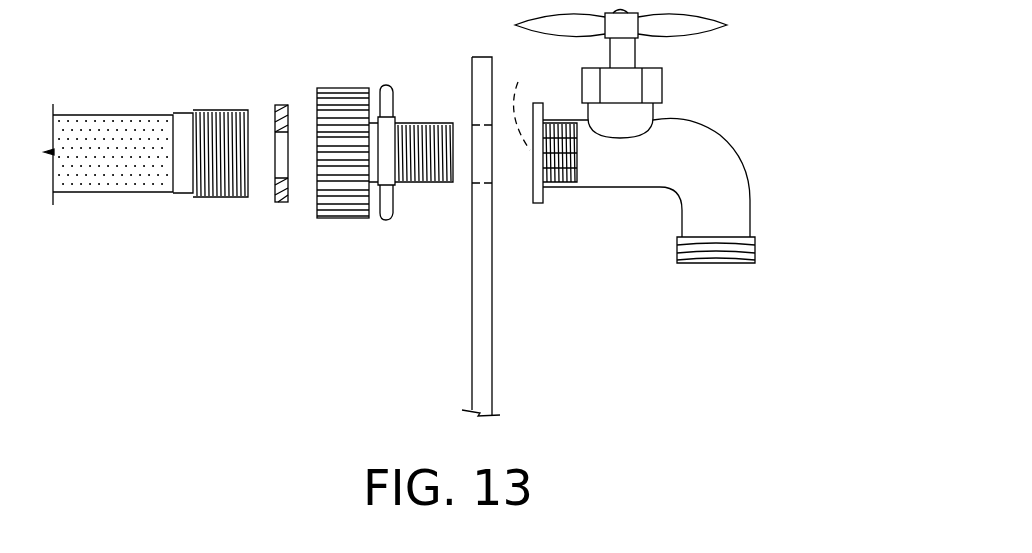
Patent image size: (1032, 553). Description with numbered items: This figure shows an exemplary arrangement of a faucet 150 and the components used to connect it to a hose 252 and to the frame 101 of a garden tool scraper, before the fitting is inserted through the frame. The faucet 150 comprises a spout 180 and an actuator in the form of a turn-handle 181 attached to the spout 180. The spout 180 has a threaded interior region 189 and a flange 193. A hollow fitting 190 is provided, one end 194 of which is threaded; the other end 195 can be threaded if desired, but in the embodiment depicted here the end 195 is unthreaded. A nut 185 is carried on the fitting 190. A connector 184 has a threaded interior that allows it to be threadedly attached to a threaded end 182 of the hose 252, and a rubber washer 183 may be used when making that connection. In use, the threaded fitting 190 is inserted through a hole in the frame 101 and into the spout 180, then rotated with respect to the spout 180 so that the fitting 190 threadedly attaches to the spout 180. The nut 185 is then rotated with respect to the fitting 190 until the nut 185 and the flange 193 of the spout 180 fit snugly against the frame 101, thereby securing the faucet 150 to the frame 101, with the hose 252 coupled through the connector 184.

The frame 101 is at (492, 365).
The faucet 150 is at (708, 152).
The spout 180 is at (718, 148).
The turn-handle 181 is at (720, 25).
The threaded end 182 is at (225, 198).
The rubber washer 183 is at (284, 203).
The hose connector 184 is at (345, 218).
The nut 185 is at (385, 92).
The interior region 189 is at (535, 100).
The hollow fitting 190 is at (391, 160).
The flange 193 is at (537, 205).
The threaded end of fitting 194 is at (434, 182).
The unthreaded end of fitting 195 is at (370, 136).
The hose 252 is at (131, 185).